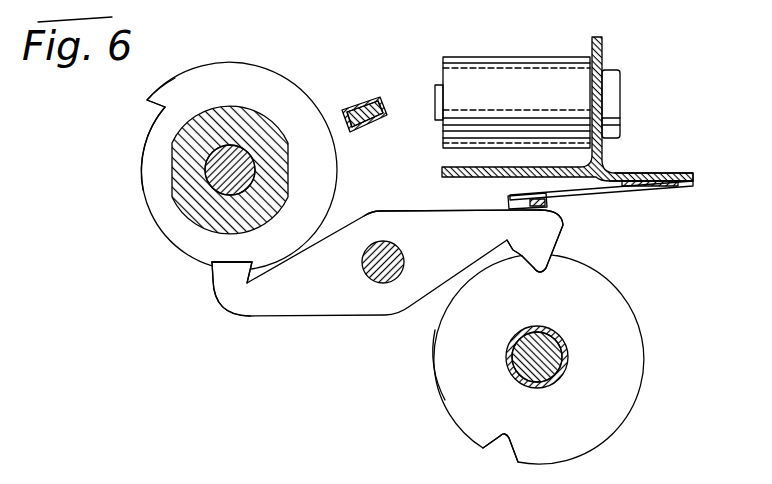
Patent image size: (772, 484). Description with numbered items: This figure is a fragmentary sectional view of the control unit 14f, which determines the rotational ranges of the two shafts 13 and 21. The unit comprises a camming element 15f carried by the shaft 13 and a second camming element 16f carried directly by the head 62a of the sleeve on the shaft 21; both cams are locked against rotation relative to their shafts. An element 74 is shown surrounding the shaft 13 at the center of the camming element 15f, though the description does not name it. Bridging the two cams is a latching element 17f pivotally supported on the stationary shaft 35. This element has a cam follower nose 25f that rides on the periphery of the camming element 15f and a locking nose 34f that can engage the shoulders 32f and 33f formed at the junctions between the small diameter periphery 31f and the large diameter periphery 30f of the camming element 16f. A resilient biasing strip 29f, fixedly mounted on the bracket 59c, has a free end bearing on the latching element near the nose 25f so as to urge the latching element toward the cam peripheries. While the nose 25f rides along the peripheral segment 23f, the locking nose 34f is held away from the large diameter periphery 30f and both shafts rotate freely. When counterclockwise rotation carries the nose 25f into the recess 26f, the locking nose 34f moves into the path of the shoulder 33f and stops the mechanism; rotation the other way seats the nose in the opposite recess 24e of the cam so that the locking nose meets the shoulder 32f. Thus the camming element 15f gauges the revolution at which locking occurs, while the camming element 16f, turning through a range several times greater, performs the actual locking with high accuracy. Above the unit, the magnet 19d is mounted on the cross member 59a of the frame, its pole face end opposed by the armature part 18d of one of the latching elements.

The shaft 13 is at (562, 358).
The control unit 14f is at (401, 279).
The camming element 15f is at (533, 369).
The camming element 16f is at (211, 146).
The latching element 17f is at (392, 212).
The armature part 18d is at (366, 99).
The magnet 19d is at (517, 60).
The shaft 21 is at (252, 155).
The peripheral segment 23f is at (431, 380).
The wheel notch 24e is at (518, 462).
The cam follower nose 25f is at (563, 228).
The recess 26f is at (530, 258).
The resilient biasing strip 29f is at (585, 188).
The large diameter periphery 30f is at (300, 85).
The small diameter periphery 31f is at (158, 216).
The shoulder 32f is at (147, 100).
The shoulder 33f is at (251, 262).
The locking nose 34f is at (218, 278).
The stationary shaft 35 is at (383, 284).
The cross member 59a is at (573, 105).
The bracket 59c is at (622, 177).
The head of the sleeve 62a is at (203, 117).
The hub ring 74 is at (547, 325).